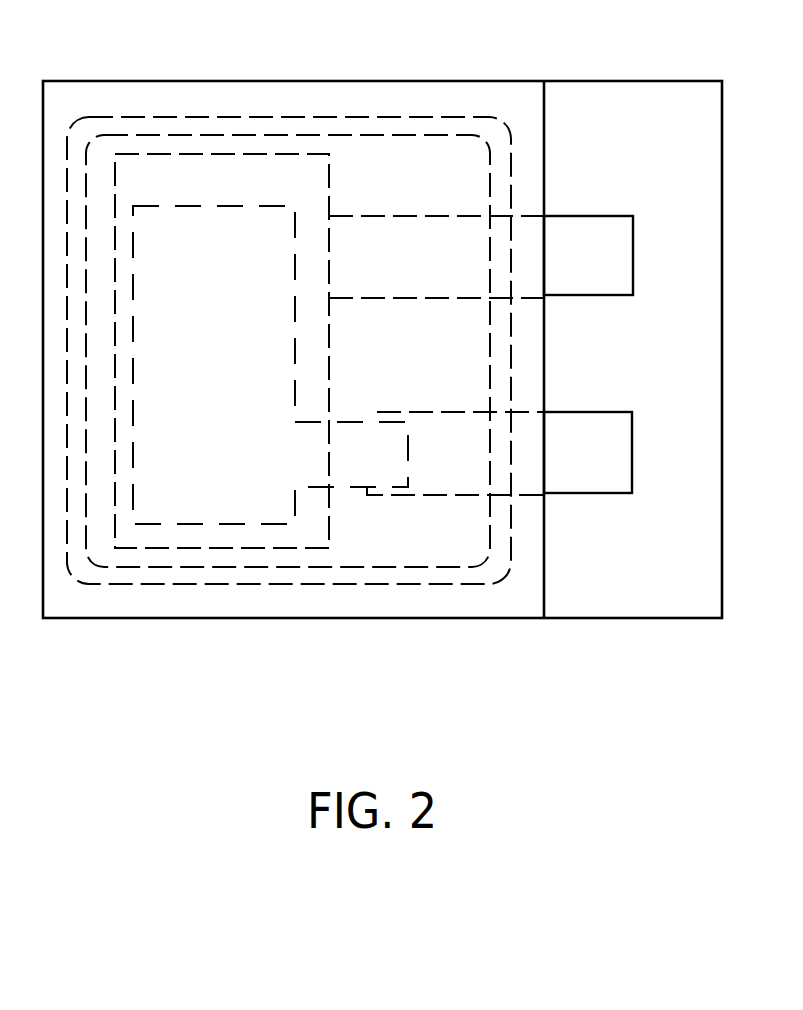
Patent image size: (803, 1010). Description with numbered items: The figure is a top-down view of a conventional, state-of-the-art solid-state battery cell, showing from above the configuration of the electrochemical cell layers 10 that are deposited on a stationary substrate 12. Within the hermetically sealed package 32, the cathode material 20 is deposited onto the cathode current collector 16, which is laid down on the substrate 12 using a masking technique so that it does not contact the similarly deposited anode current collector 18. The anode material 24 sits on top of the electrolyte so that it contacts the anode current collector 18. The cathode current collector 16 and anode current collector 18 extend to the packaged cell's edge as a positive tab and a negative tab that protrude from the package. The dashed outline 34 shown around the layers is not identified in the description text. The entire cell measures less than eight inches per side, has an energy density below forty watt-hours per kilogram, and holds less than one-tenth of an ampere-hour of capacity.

The electrochemical cell layers 10 is at (203, 148).
The substrate 12 is at (667, 140).
The cathode current collector 16 is at (620, 215).
The anode current collector 18 is at (617, 410).
The cathode material 20 is at (318, 199).
The anode material 24 is at (229, 379).
The hermetic seal 32 is at (515, 80).
The guard ring 34 is at (365, 117).